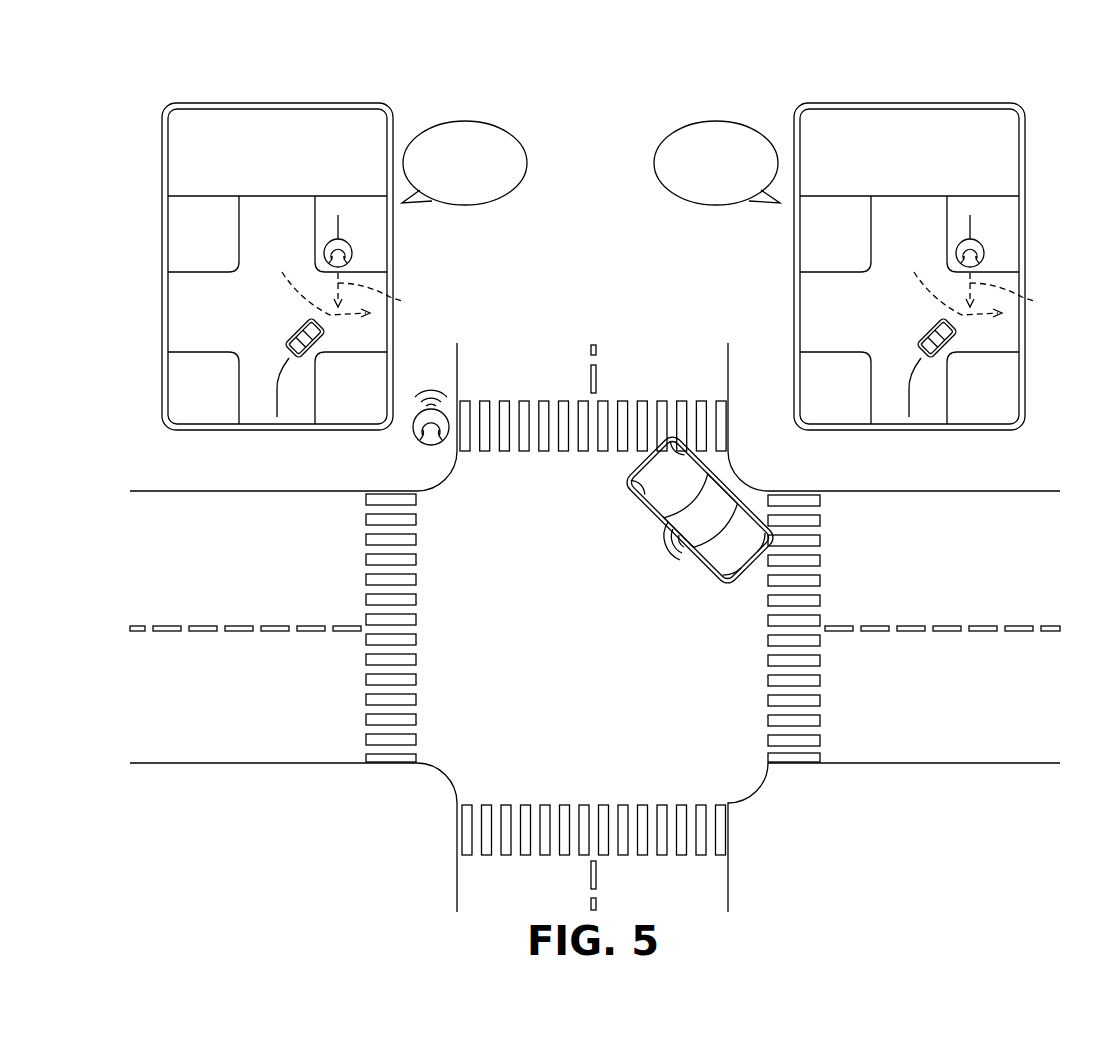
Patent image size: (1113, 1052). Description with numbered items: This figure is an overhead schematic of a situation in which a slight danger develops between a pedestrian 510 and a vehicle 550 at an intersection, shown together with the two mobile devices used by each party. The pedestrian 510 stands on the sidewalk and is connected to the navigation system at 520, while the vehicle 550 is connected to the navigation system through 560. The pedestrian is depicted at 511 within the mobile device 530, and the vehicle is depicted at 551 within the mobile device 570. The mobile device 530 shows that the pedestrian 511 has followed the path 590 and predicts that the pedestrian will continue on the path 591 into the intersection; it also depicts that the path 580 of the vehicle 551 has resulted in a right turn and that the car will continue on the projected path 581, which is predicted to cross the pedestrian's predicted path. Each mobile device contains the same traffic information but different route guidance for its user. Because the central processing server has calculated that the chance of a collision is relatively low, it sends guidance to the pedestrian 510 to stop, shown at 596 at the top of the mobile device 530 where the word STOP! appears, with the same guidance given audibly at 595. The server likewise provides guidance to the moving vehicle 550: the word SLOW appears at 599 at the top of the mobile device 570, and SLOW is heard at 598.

The pedestrian 510 is at (412, 431).
The pedestrian depiction 511 is at (353, 253).
The pedestrian navigation system connection 520 is at (437, 380).
The mobile device 530 is at (278, 103).
The vehicle 550 is at (682, 564).
The vehicle depiction 551 is at (291, 330).
The vehicle navigation system connection 560 is at (653, 548).
The mobile device 570 is at (908, 103).
The vehicle path 580 is at (280, 400).
The projected path 581 is at (632, 282).
The path 590 is at (336, 230).
The path 591 is at (405, 302).
The audible guidance 595 is at (467, 122).
The guidance 596 is at (319, 135).
The audible guidance 598 is at (713, 122).
The slow text alert 599 is at (879, 132).